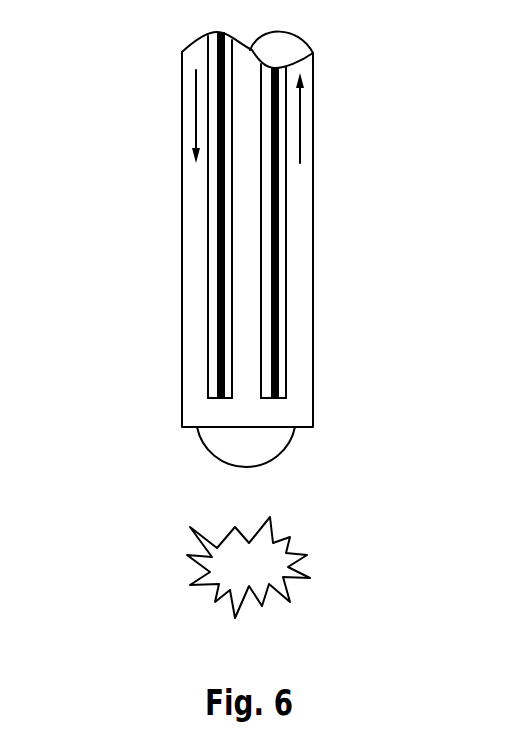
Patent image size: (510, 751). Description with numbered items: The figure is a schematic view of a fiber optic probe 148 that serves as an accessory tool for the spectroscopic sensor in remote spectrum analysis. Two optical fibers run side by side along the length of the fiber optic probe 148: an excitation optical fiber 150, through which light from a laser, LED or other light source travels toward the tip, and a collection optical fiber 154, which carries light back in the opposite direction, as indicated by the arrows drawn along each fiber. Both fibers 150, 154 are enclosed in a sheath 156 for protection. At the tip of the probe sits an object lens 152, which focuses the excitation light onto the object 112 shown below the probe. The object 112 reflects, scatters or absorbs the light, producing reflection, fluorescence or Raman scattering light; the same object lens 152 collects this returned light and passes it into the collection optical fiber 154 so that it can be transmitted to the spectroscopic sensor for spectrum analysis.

The fiber optic probe 148 is at (455, 364).
The excitation optical fiber 150 is at (207, 303).
The collection optical fiber 154 is at (286, 297).
The sheath 156 is at (182, 355).
The object lens 152 is at (283, 452).
The object 112 is at (188, 570).